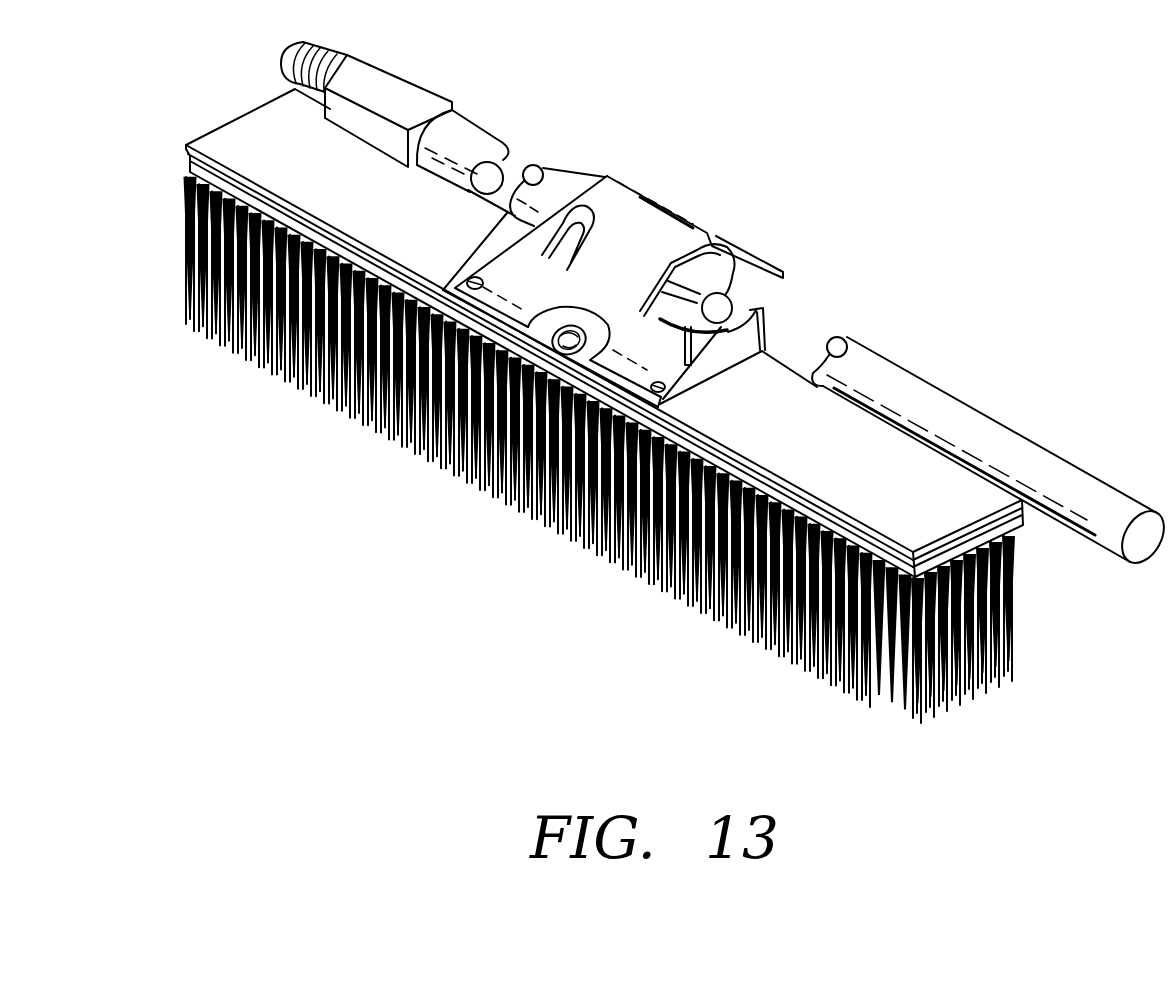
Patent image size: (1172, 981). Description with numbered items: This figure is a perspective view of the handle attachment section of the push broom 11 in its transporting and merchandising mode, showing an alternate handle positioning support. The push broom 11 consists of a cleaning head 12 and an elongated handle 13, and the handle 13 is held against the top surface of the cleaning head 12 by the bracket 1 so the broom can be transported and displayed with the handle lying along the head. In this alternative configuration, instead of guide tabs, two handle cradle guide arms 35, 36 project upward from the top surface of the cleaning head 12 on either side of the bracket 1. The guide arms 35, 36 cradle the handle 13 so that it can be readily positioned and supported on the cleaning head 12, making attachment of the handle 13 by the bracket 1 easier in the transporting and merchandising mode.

The bracket 1 is at (630, 208).
The push broom 11 is at (588, 166).
The cleaning head 12 is at (942, 488).
The elongated handle 13 is at (942, 413).
The handle cradle guide arm 35 is at (505, 238).
The handle cradle guide arm 36 is at (762, 348).